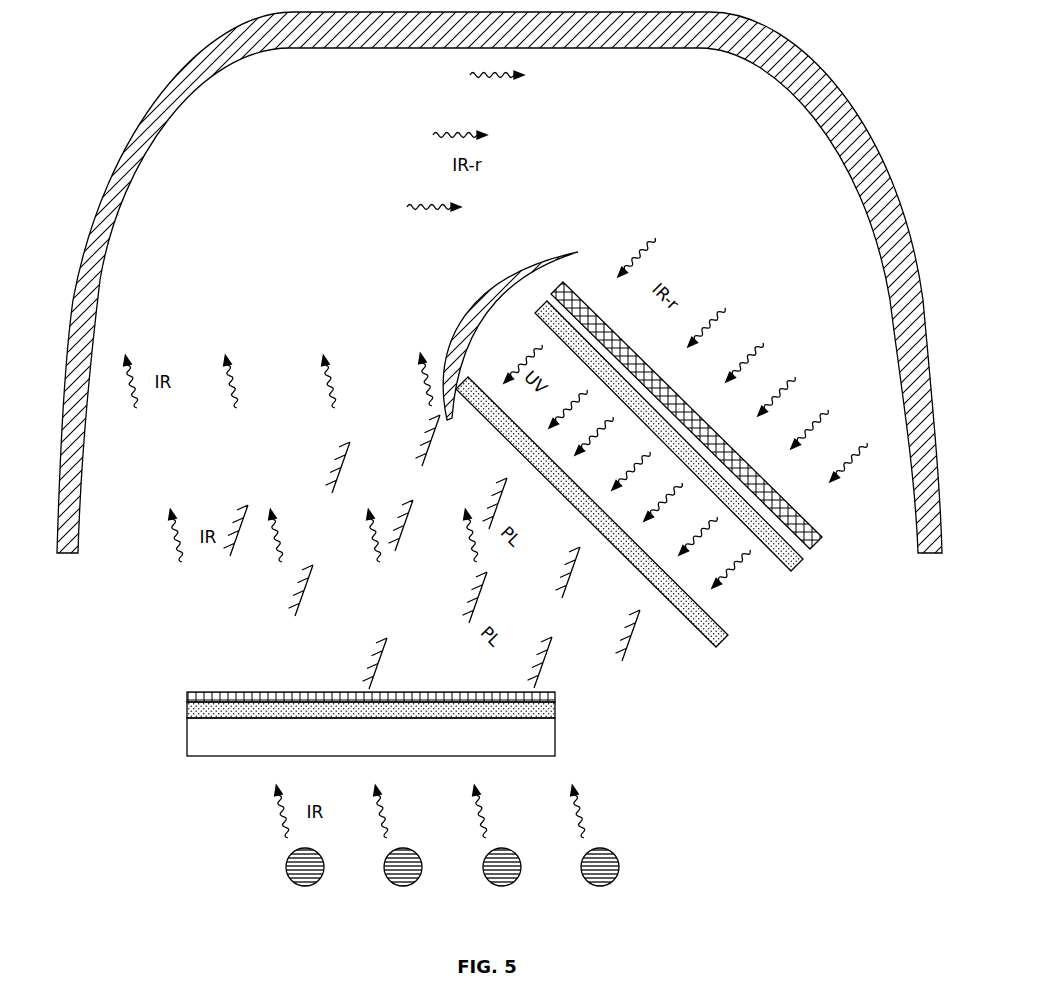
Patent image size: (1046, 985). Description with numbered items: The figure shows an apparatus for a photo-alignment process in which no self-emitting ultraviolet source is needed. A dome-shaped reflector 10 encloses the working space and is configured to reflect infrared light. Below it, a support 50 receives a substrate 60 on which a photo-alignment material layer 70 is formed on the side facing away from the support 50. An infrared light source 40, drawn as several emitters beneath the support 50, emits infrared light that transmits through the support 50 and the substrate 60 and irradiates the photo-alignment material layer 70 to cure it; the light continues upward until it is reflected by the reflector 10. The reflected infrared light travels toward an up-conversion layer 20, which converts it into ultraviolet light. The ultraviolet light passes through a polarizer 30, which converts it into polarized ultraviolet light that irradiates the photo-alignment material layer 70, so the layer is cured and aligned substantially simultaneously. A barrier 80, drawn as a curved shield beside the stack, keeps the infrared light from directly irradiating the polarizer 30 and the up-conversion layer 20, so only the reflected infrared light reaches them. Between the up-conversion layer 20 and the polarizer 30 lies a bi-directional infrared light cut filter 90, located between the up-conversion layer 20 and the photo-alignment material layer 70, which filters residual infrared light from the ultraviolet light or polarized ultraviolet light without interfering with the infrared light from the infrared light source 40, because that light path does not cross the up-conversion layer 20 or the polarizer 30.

The reflector 10 is at (499, 282).
The up-conversion layer 20 is at (686, 415).
The polarizer 30 is at (592, 512).
The infrared light source 40 is at (452, 867).
The support 50 is at (371, 737).
The substrate 60 is at (371, 710).
The photo-alignment material layer 70 is at (408, 696).
The barrier 80 is at (461, 318).
The infrared light cut filter 90 is at (669, 436).